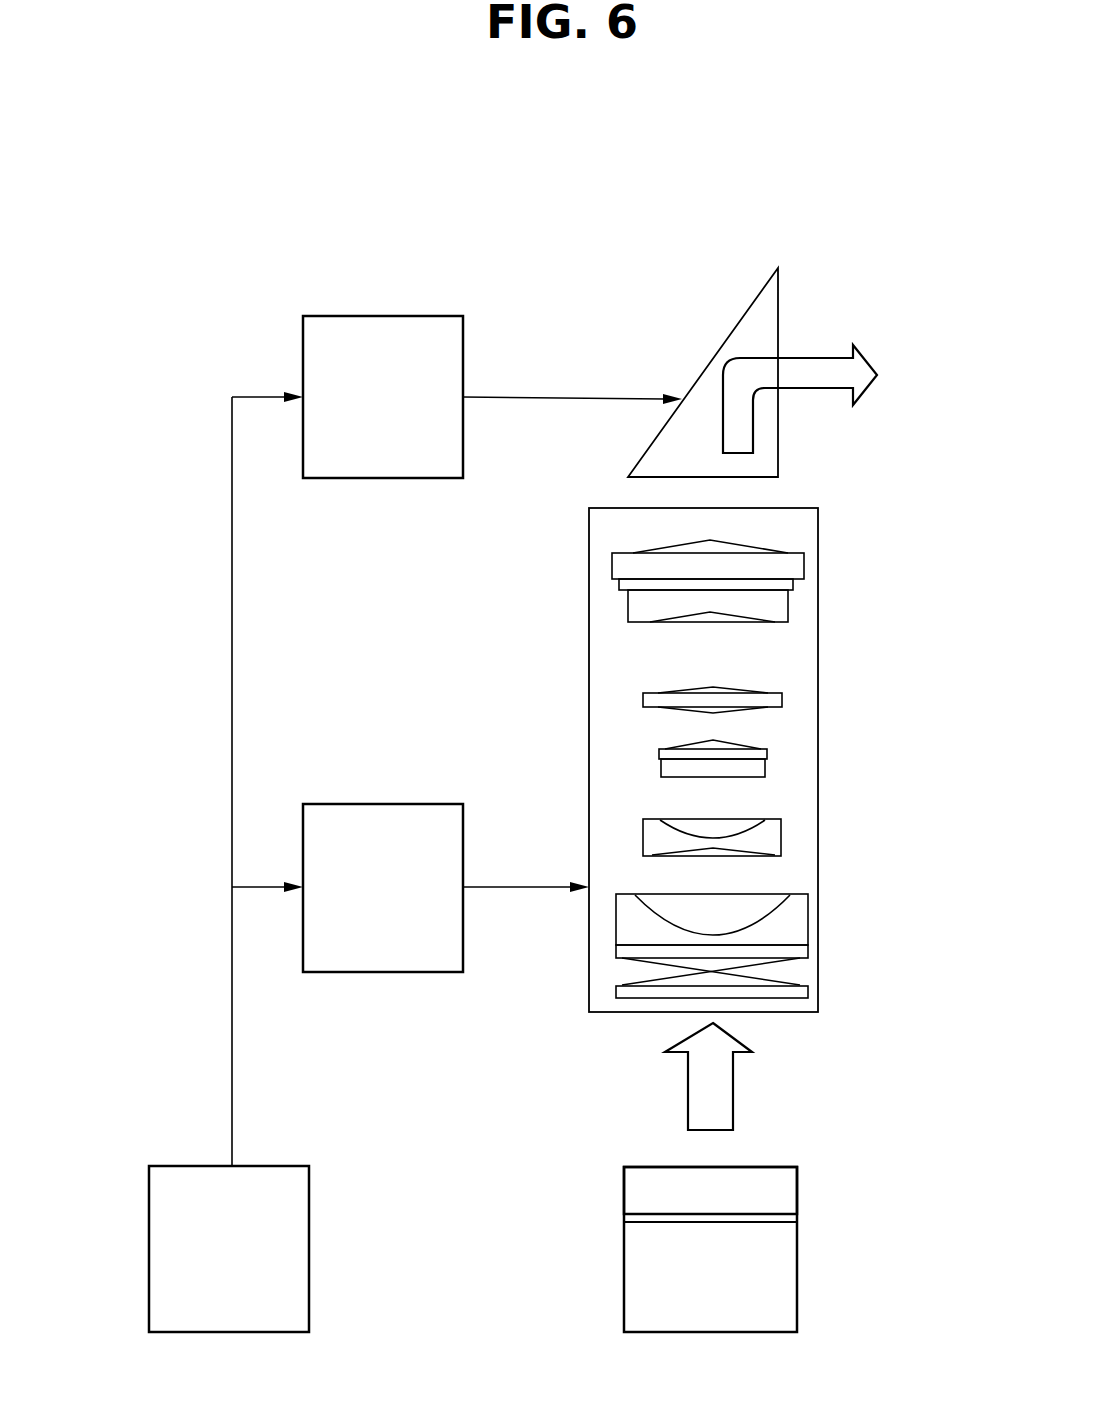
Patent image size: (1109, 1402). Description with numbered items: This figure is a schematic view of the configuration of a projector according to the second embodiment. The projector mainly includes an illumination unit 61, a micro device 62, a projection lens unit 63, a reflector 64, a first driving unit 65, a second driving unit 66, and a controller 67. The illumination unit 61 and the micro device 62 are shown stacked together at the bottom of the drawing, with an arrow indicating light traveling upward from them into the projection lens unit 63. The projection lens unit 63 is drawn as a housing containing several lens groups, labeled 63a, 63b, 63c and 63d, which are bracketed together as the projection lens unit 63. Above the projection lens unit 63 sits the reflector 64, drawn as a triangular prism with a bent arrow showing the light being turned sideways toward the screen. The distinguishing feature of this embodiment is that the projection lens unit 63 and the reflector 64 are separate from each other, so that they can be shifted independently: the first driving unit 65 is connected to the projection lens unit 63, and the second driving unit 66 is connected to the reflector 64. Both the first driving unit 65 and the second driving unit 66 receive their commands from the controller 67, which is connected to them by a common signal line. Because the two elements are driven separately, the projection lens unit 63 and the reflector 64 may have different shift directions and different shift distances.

The illumination unit 61 is at (797, 1274).
The micro device 62 is at (797, 1186).
The projection lens unit 63 is at (782, 760).
The first lens group 63a is at (763, 923).
The second lens group 63b is at (833, 780).
The third lens group 63c is at (833, 677).
The fourth lens group 63d is at (833, 540).
The reflector 64 is at (745, 332).
The first driving unit 65 is at (380, 972).
The second driving unit 66 is at (380, 478).
The controller 67 is at (149, 1240).